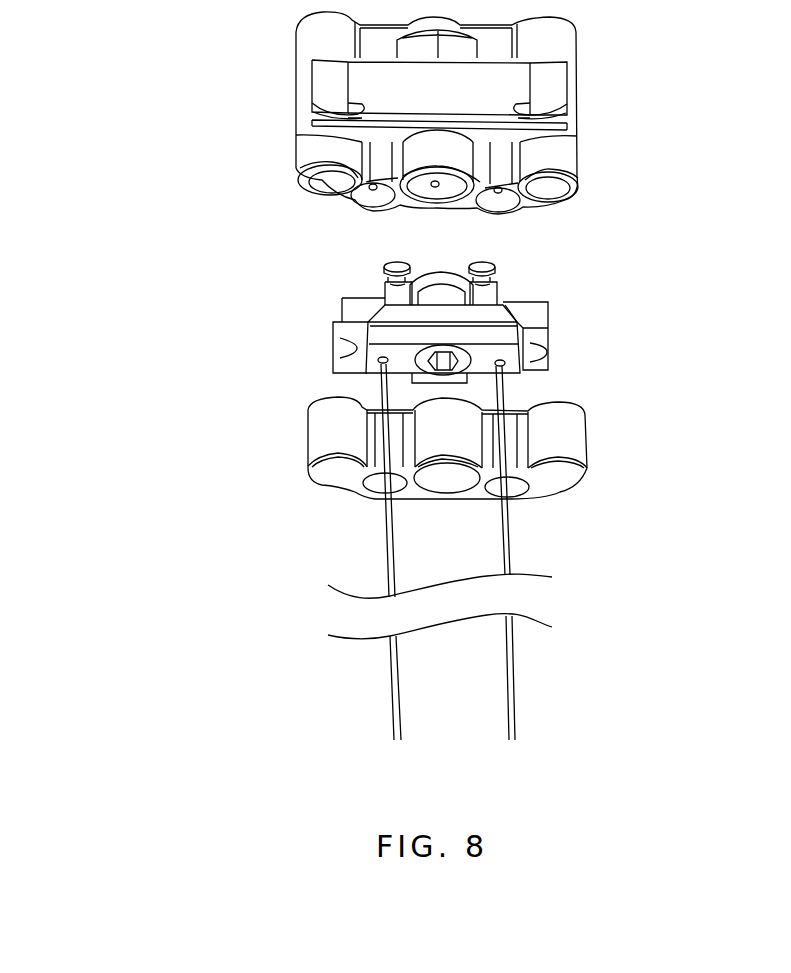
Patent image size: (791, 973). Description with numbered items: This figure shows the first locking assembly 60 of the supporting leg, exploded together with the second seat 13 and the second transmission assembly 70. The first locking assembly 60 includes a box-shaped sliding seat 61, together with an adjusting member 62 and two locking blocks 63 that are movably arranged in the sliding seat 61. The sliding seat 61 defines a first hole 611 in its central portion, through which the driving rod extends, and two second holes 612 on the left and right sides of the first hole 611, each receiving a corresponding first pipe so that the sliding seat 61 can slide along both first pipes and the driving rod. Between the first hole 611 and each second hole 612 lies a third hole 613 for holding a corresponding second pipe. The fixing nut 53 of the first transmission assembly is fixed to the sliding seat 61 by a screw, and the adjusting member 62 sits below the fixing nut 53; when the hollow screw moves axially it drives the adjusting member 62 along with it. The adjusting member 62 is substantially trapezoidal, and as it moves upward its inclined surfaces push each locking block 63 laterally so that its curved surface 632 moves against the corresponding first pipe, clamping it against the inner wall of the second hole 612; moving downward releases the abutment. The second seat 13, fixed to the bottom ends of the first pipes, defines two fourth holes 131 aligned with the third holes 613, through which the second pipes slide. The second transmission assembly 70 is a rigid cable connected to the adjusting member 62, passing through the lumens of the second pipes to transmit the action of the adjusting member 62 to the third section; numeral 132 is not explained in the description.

The first locking assembly 60 is at (187, 195).
The sliding seat 61 is at (562, 60).
The first hole 611 is at (438, 195).
The second hole 612 is at (300, 180).
The third hole 613 is at (372, 204).
The fixing nut 53 is at (497, 293).
The adjusting member 62 is at (370, 372).
The locking block 63 is at (358, 319).
The curved surface 632 is at (545, 356).
The second seat 13 is at (571, 446).
The fourth hole 131 is at (366, 490).
The central hole 132 is at (435, 478).
The second transmission assembly 70 is at (505, 543).